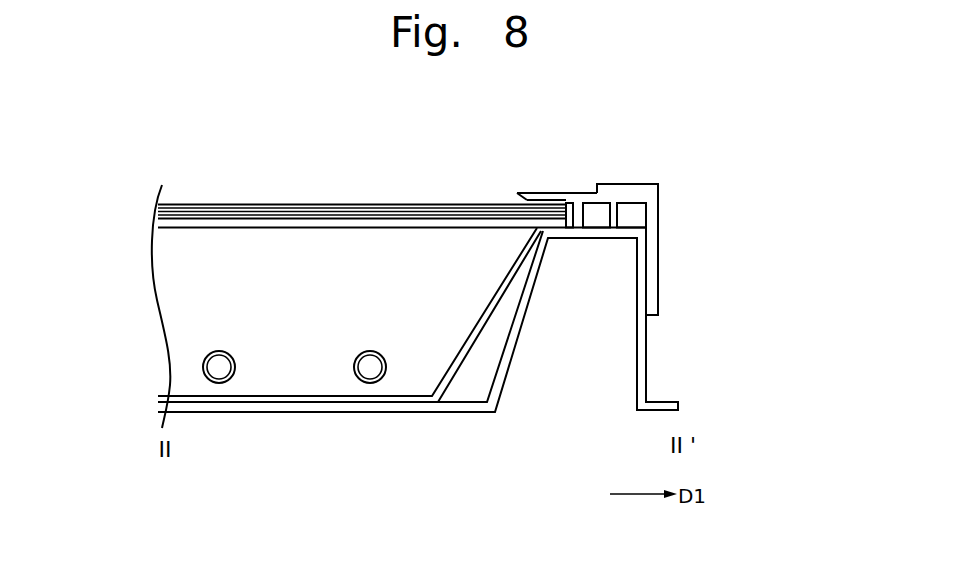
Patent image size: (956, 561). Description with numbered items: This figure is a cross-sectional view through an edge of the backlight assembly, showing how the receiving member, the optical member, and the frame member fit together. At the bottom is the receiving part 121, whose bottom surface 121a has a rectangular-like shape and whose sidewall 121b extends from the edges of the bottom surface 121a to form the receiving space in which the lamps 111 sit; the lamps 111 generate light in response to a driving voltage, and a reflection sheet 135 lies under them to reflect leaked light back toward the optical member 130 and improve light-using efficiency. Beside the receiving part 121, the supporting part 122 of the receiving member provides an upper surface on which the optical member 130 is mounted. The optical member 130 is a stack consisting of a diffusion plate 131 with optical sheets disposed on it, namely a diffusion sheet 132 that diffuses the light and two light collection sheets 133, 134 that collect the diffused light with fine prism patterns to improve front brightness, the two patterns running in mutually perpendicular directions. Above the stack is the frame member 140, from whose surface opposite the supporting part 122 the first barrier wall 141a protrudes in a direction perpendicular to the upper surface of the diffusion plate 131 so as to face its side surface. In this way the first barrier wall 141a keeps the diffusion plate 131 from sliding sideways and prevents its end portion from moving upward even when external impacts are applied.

The lamp 111 is at (372, 383).
The receiving part 121 is at (418, 378).
The bottom surface 121a is at (442, 407).
The sidewall 121b is at (505, 370).
The supporting part 122 is at (555, 233).
The optical member 130 is at (362, 161).
The diffusion plate 131 is at (430, 138).
The diffusion sheet 132 is at (278, 214).
The light collection sheet 133 is at (337, 208).
The light collection sheet 134 is at (398, 204).
The reflection sheet 135 is at (252, 396).
The frame member 140 is at (650, 243).
The first barrier wall 141a is at (588, 216).